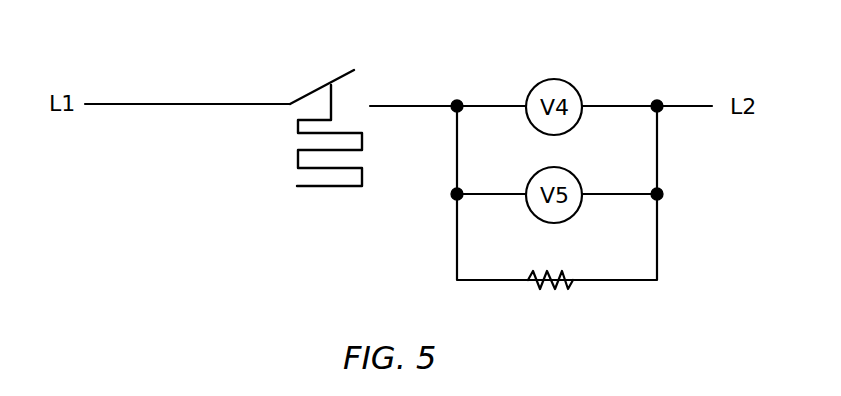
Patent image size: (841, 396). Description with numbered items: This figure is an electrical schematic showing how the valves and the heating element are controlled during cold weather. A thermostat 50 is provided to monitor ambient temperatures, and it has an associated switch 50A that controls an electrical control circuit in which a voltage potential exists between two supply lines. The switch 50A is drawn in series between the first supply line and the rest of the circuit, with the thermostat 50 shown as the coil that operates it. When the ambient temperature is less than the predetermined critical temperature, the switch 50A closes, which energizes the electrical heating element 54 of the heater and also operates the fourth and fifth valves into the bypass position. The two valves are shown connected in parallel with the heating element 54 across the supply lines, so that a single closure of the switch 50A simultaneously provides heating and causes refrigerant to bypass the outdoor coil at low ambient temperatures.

The switch 50A is at (311, 88).
The thermostat 50 is at (322, 187).
The electrical heating element 54 is at (563, 275).